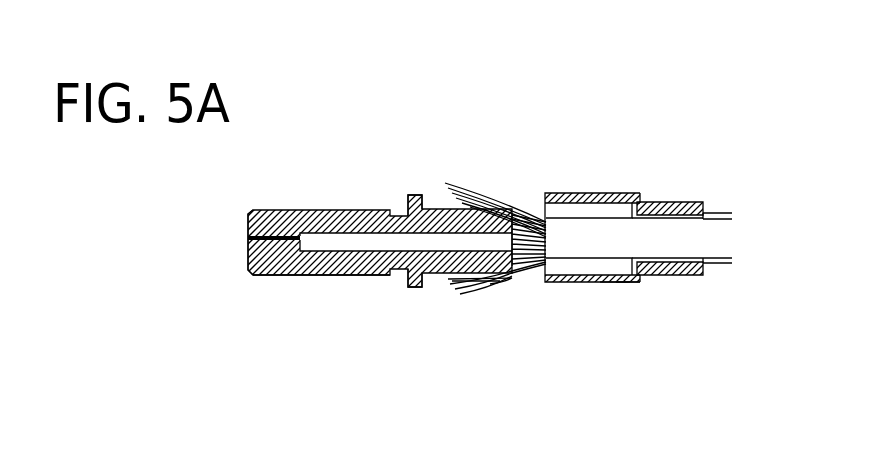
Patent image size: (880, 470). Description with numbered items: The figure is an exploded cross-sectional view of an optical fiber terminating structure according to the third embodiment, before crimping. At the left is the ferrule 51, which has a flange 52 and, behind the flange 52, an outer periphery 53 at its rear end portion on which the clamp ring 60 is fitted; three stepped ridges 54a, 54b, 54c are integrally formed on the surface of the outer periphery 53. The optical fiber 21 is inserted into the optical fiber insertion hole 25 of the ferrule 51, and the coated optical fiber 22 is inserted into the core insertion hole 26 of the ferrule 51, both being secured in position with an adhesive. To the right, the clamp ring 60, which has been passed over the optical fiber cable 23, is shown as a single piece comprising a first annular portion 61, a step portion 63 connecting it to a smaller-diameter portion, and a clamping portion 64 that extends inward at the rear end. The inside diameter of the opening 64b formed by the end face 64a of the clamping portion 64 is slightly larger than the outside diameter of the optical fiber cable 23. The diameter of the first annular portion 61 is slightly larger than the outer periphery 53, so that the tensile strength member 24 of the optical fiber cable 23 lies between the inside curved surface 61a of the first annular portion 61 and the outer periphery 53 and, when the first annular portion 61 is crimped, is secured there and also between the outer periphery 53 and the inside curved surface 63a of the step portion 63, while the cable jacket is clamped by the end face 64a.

The optical fiber 21 is at (244, 262).
The coated optical fiber 22 is at (364, 272).
The optical fiber cable 23 is at (623, 283).
The tensile strength member 24 is at (528, 208).
The optical fiber insertion hole 25 is at (273, 222).
The core insertion hole 26 is at (336, 234).
The ferrule 51 is at (293, 275).
The flange 52 is at (408, 287).
The outer periphery 53 is at (488, 198).
The stepped ridge 54a is at (456, 283).
The stepped ridge 54b is at (473, 284).
The stepped ridge 54c is at (492, 285).
The clamp ring 60 is at (679, 104).
The first annular portion 61 is at (579, 194).
The inside curved surface 61a is at (600, 207).
The step portion 63 is at (640, 275).
The inside curved surface 63a is at (615, 276).
The clamping portion 64 is at (704, 212).
The end face 64a is at (707, 258).
The opening 64b is at (700, 222).